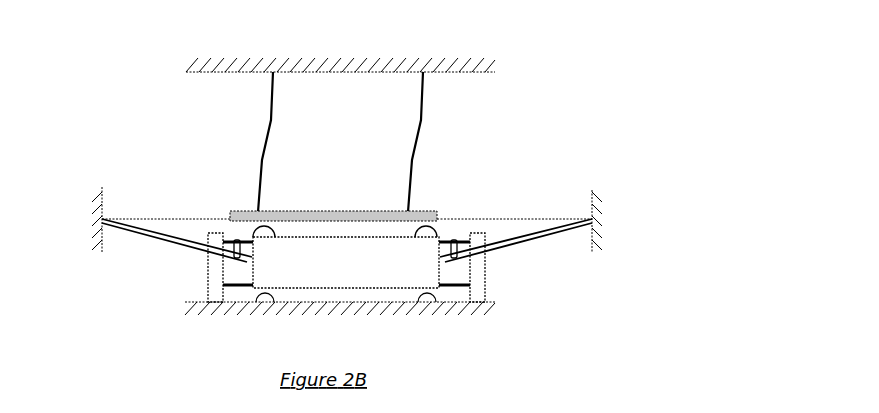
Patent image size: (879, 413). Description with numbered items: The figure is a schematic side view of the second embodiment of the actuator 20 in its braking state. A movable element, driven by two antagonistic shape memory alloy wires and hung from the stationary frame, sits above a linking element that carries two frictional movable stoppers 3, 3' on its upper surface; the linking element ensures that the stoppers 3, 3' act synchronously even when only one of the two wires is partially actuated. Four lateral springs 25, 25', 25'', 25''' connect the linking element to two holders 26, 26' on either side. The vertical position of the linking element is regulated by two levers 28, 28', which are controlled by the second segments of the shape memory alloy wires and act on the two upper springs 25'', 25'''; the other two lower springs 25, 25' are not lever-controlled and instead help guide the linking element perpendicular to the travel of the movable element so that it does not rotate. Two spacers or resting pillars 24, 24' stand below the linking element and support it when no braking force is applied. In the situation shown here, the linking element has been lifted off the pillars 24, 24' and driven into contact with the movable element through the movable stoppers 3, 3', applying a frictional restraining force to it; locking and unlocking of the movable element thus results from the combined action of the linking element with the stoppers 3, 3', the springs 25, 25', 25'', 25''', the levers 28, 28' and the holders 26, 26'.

The actuator 20 is at (608, 143).
The frictional movable stopper 3 is at (221, 207).
The frictional movable stopper 3' is at (455, 206).
The spacer/resting pillar 24 is at (445, 323).
The spacer/resting pillar 24' is at (255, 324).
The lateral spring 25 is at (492, 313).
The lateral spring 25' is at (200, 332).
The lateral spring 25'' is at (176, 210).
The lateral spring 25''' is at (516, 220).
The holder 26 is at (167, 267).
The holder 26' is at (567, 272).
The lever 28 is at (189, 281).
The lever 28' is at (496, 268).